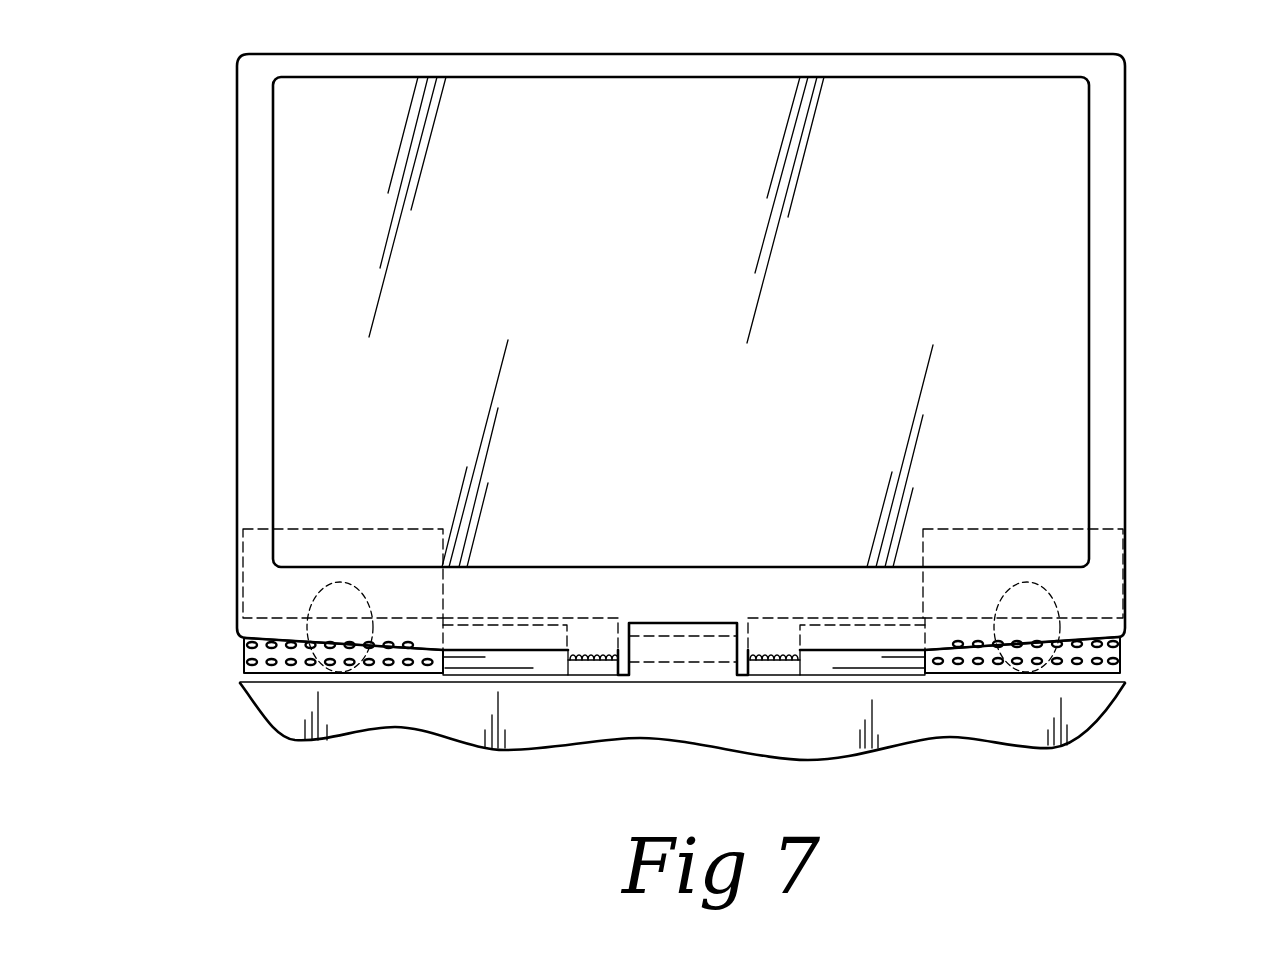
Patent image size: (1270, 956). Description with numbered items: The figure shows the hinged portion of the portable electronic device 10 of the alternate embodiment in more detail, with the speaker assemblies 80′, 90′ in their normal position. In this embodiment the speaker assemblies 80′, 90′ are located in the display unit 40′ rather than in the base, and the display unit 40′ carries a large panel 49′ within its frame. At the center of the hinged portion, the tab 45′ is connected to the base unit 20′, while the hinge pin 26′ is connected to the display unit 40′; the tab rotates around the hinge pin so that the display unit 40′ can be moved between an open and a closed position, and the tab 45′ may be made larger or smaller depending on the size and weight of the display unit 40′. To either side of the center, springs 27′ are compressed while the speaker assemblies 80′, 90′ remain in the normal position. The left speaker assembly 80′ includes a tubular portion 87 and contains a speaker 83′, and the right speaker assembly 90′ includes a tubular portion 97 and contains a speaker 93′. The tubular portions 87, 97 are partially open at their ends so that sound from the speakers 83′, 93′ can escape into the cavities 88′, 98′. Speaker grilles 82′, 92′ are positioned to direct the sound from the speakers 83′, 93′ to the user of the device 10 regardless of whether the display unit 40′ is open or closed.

The portable electronic device 10 is at (710, 407).
The base unit 20′ is at (700, 728).
The hinge pin 26′ is at (714, 640).
The springs 27′ is at (608, 660).
The display unit 40′ is at (237, 450).
The tab 45′ is at (668, 625).
The window panel 49′ is at (705, 338).
The speaker assembly 80′ is at (384, 630).
The speaker grille 82′ is at (243, 660).
The speaker 83′ is at (329, 604).
The tubular portion 87 is at (540, 630).
The cavity 88′ is at (583, 672).
The speaker assembly 90′ is at (981, 629).
The speaker grille 92′ is at (1123, 657).
The speaker 93′ is at (1017, 607).
The tubular portion 97 is at (826, 630).
The cavity 98′ is at (787, 668).